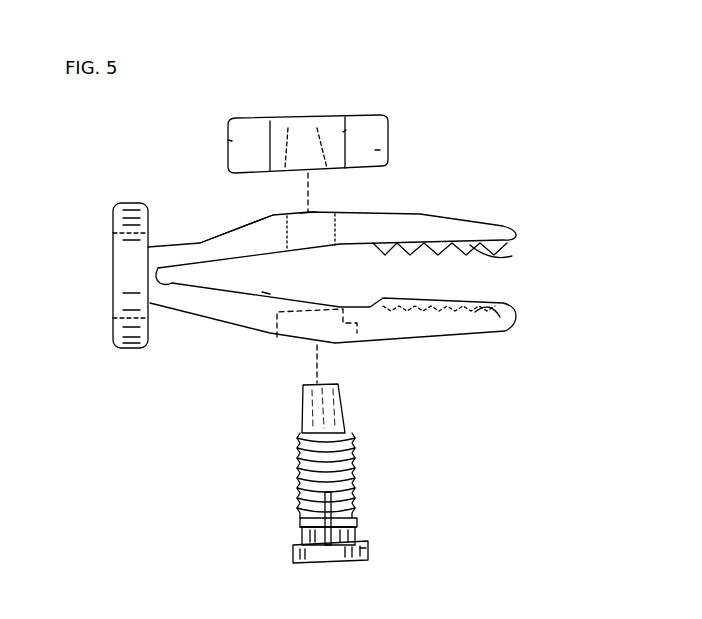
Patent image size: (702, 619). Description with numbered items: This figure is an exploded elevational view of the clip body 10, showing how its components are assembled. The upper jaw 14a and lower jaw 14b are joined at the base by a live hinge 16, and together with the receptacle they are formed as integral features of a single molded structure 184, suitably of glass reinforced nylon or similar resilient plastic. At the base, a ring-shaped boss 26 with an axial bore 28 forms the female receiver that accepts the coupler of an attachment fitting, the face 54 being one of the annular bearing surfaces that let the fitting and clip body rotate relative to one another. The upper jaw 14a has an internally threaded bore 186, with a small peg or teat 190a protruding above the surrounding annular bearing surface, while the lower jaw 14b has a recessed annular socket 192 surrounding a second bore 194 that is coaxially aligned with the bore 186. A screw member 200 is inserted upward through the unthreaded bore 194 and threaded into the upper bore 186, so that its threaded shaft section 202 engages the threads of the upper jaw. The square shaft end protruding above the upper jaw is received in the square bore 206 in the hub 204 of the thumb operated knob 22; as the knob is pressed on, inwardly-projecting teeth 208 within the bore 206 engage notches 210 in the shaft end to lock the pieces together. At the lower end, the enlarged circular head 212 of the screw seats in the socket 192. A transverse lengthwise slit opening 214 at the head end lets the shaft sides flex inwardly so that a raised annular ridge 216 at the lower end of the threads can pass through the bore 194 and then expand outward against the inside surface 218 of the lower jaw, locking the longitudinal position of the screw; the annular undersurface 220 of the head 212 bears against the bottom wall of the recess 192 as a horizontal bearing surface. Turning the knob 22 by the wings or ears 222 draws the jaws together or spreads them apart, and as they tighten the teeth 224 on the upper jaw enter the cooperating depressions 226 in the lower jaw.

The clip body 10 is at (524, 178).
The thumb operated knob 22 is at (385, 116).
The wings or ears 222 is at (228, 143).
The square bore 206 is at (288, 128).
The inwardly-projecting teeth 208 is at (317, 128).
The hub 204 is at (343, 132).
The ring-shaped boss 26 is at (127, 203).
The axial bore 28 is at (120, 238).
The face 54 is at (112, 330).
The upper jaw 14a is at (515, 230).
The lower jaw 14b is at (515, 322).
The molded structure 184 is at (216, 234).
The peg or teat 190a is at (308, 212).
The internally threaded bore 186 is at (298, 240).
The teeth 224 is at (512, 257).
The live hinge 16 is at (172, 284).
The inside surface 218 is at (265, 293).
The second bore 194 is at (347, 305).
The depressions 226 is at (472, 312).
The recessed annular socket 192 is at (285, 328).
The screw member 200 is at (320, 498).
The notches 210 is at (342, 403).
The threaded shaft section 202 is at (300, 478).
The transverse lengthwise slit opening 214 is at (332, 508).
The raised annular ridge 216 is at (357, 522).
The enlarged circular head 212 is at (293, 552).
The annular undersurface 220 is at (370, 542).